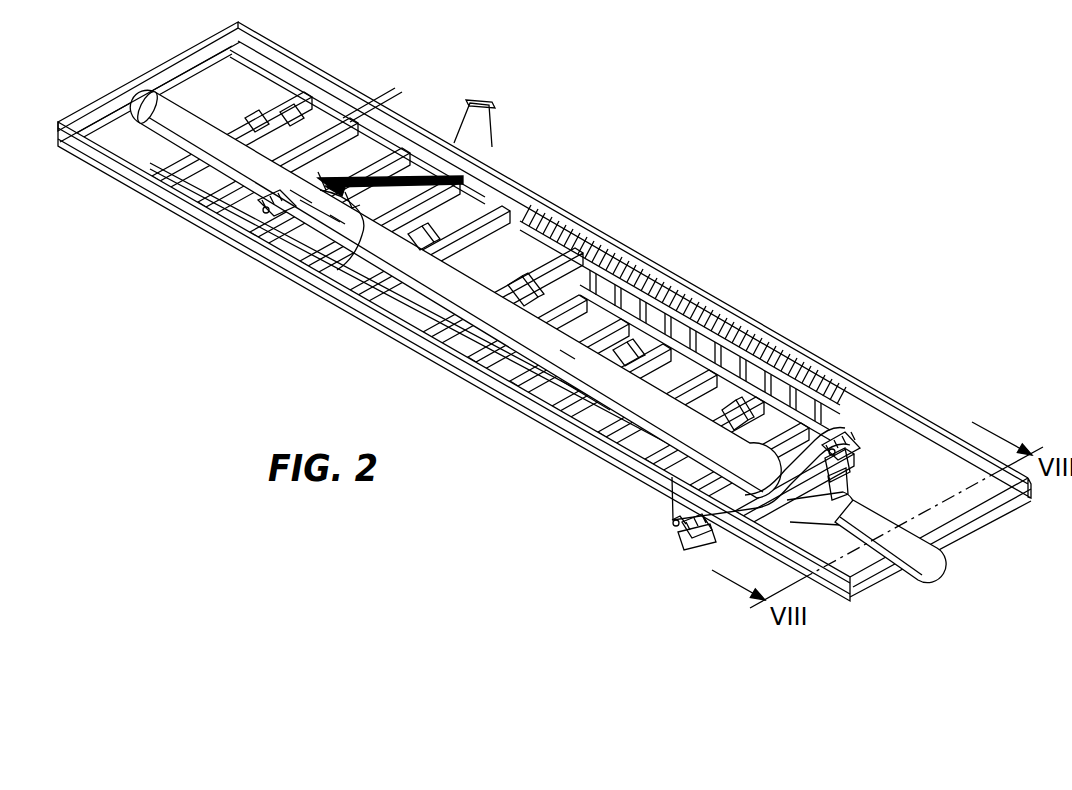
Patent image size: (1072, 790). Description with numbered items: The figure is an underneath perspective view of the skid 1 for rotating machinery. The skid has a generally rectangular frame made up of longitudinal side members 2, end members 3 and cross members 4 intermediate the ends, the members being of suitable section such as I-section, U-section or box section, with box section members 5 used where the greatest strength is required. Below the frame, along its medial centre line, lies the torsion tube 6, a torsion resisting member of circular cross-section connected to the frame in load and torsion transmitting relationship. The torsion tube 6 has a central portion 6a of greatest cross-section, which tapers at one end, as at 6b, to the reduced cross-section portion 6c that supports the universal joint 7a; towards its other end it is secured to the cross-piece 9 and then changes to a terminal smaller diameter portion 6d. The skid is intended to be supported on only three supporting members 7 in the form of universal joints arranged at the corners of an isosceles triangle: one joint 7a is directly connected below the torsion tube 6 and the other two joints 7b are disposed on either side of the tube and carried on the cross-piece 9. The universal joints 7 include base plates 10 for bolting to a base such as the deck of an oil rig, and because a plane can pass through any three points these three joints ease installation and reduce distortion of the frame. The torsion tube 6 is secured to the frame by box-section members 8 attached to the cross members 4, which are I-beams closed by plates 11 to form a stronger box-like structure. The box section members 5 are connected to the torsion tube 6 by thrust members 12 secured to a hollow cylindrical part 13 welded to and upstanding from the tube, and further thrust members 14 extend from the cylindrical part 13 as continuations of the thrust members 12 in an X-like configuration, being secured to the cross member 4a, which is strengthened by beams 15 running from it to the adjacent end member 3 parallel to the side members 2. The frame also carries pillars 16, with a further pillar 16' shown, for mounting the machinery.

The skid 1 is at (453, 380).
The longitudinal side members 2 is at (581, 226).
The end members 3 is at (97, 112).
The cross members 4 is at (462, 236).
The cross member 4a is at (343, 120).
The box section members 5 is at (415, 132).
The torsion tube 6 is at (555, 351).
The central portion 6a is at (593, 382).
The tapered portion 6b is at (320, 222).
The reduced cross-section portion 6c is at (223, 153).
The terminal smaller diameter portion 6d is at (897, 540).
The supporting members 7 is at (678, 547).
The universal joint 7a is at (260, 214).
The universal joints 7b is at (866, 450).
The members 8 is at (436, 244).
The cross-piece 9 is at (803, 448).
The base plates 10 is at (277, 218).
The plates 11 is at (520, 282).
The thrust members 12 is at (418, 180).
The hollow cylindrical part 13 is at (324, 212).
The thrust members 14 is at (328, 178).
The beams 15 is at (290, 118).
The pillars 16 is at (374, 203).
The support 16' is at (505, 127).